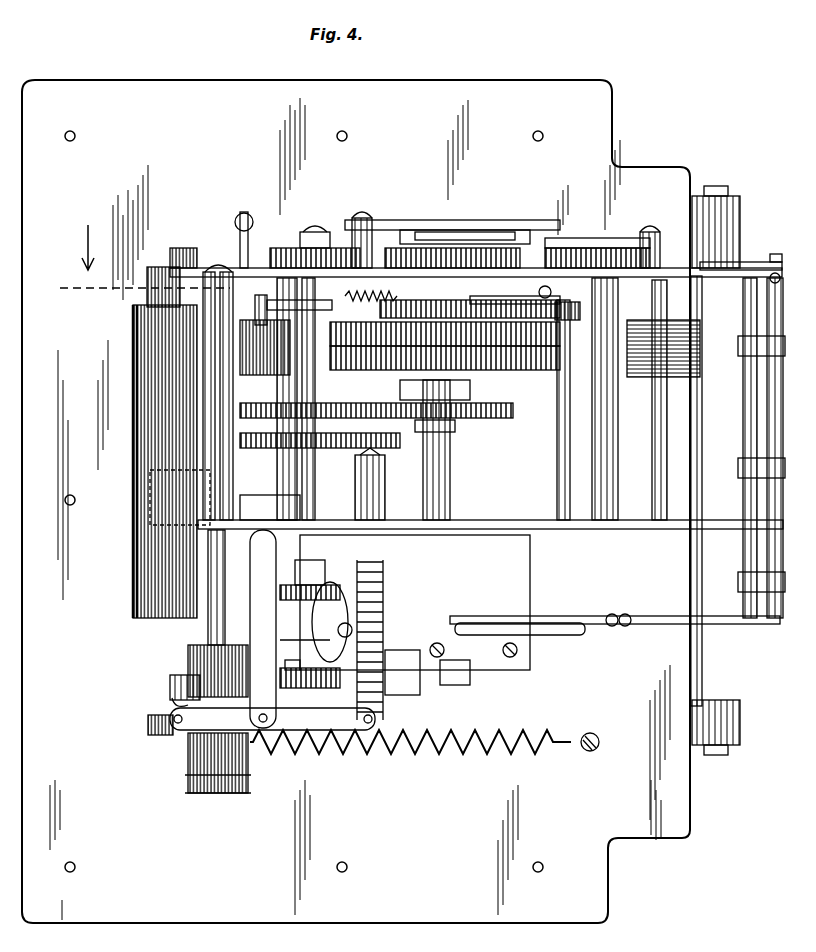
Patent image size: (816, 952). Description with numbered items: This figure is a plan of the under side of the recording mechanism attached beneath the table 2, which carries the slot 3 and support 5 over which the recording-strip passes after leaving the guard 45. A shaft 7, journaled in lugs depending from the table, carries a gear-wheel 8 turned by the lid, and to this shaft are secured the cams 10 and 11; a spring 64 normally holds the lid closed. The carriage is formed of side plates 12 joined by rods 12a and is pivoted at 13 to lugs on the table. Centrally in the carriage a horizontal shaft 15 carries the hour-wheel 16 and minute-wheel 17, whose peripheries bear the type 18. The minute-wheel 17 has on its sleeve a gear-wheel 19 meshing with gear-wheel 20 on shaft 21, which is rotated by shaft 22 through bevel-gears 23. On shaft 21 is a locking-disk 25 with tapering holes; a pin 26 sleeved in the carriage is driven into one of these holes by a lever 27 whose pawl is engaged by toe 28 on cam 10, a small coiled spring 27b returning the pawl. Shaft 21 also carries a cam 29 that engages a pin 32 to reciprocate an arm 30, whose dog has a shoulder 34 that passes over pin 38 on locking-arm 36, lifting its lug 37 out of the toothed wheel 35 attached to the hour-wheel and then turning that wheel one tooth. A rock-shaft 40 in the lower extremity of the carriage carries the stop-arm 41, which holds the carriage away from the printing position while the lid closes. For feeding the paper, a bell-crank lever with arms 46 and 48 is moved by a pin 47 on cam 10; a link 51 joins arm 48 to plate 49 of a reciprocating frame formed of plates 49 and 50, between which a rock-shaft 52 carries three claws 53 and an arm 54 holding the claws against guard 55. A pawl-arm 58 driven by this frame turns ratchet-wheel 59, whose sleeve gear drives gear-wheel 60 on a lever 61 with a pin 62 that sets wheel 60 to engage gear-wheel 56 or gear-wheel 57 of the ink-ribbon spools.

The table 2 is at (356, 501).
The slot 3 is at (136, 259).
The support 5 is at (415, 602).
The shaft 7 is at (208, 624).
The gear-wheel 8 is at (160, 735).
The cam 10 is at (170, 680).
The cam 11 is at (262, 500).
The side plates 12 is at (256, 268).
The rods 12a is at (600, 529).
The pivot 13 is at (732, 198).
The horizontal shaft 15 is at (450, 478).
The hour-wheel 16 is at (480, 320).
The minute-wheel 17 is at (480, 370).
The type 18 is at (390, 370).
The gear-wheel 19 is at (470, 418).
The gear-wheel 20 is at (356, 402).
The shaft 21 is at (312, 480).
The shaft 22 is at (565, 636).
The bevel-gears 23 is at (325, 616).
The locking-disk 25 is at (378, 455).
The pin 26 is at (384, 476).
The lever 27 is at (272, 719).
The coiled spring 27b is at (190, 746).
The toe 28 is at (172, 700).
The cam 29 is at (262, 314).
The reciprocating arm 30 is at (282, 335).
The pin 32 is at (228, 268).
The shoulder 34 is at (381, 291).
The wheel 35 is at (556, 372).
The locking-arm 36 is at (535, 289).
The lug 37 is at (556, 314).
The pin 38 is at (470, 299).
The rock-shaft 40 is at (170, 270).
The stop-arm 41 is at (183, 248).
The guard 45 is at (133, 578).
The arm 46 is at (328, 676).
The pin 47 is at (292, 662).
The arm 48 is at (410, 670).
The side plate 49 is at (738, 622).
The side plate 50 is at (748, 264).
The link 51 is at (608, 626).
The rock-shaft 52 is at (763, 448).
The claws 53 is at (370, 300).
The arm 54 is at (772, 284).
The guard 55 is at (700, 410).
The gear-wheel 56 is at (298, 250).
The gear-wheel 57 is at (648, 240).
The pawl-arm 58 is at (608, 240).
The ratchet-wheel 59 is at (445, 232).
The gear-wheel 60 is at (495, 250).
The lever 61 is at (470, 234).
The pin 62 is at (420, 222).
The spring 64 is at (412, 750).